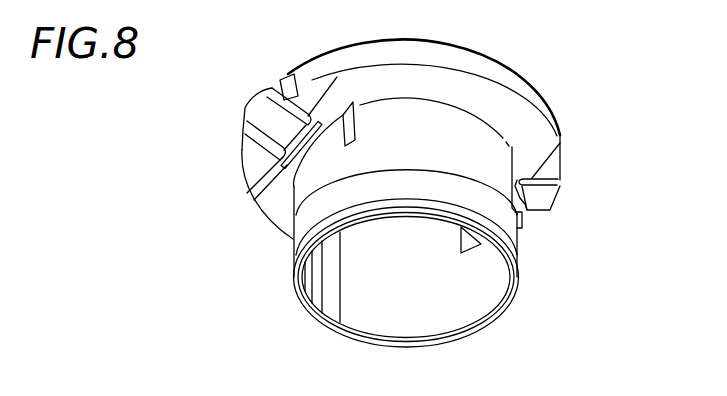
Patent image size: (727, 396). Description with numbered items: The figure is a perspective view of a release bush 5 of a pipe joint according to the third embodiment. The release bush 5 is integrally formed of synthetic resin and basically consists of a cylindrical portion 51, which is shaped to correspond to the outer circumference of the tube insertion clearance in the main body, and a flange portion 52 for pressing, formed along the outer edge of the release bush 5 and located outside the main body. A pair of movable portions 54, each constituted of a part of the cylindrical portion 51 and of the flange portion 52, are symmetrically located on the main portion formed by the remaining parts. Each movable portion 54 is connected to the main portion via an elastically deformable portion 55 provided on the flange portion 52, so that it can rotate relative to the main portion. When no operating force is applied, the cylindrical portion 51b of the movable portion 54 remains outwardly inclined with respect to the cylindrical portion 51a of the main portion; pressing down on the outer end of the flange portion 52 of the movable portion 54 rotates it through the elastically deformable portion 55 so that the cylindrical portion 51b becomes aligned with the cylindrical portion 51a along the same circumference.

The release bush 5 is at (575, 77).
The cylindrical portion 51 is at (526, 288).
The cylindrical portion of the main portion 51a is at (312, 220).
The cylindrical portion of the movable portion 51b is at (300, 118).
The flange portion 52 is at (483, 70).
The movable portion 54 is at (244, 95).
The elastically deformable portion 55 is at (260, 171).